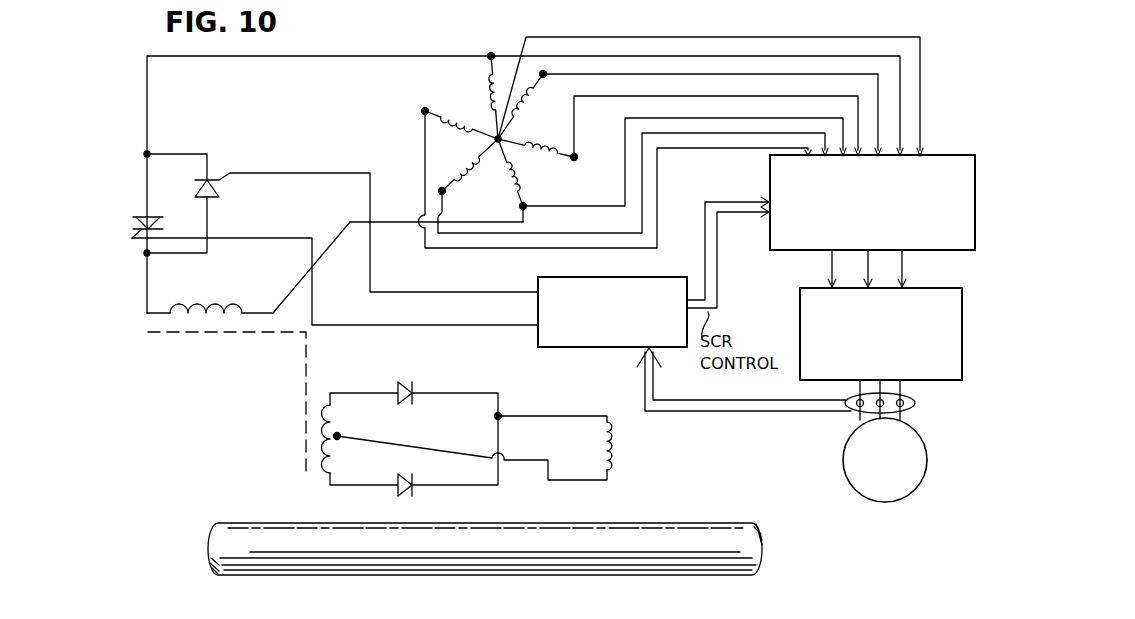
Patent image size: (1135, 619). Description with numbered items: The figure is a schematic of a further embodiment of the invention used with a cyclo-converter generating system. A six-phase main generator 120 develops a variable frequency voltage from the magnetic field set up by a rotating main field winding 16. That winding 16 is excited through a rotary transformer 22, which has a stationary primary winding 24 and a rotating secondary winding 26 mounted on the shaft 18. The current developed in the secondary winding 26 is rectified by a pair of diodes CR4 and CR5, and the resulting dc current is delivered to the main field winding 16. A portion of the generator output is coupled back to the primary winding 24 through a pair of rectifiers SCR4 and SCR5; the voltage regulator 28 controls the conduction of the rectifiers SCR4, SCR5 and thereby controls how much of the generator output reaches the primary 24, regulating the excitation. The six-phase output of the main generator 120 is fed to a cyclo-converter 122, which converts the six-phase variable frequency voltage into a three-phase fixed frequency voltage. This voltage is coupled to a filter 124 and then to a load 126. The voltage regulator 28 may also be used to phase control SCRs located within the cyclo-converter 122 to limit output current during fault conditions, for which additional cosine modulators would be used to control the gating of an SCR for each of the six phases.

The main field winding 16 is at (610, 472).
The shaft 18 is at (728, 533).
The rotary transformer 22 is at (256, 377).
The primary winding 24 is at (240, 310).
The secondary winding 26 is at (328, 404).
The voltage regulator 28 is at (602, 338).
The main generator 120 is at (431, 91).
The cyclo-converter 122 is at (930, 157).
The filter 124 is at (916, 302).
The load 126 is at (913, 460).
The rectifier SCR4 is at (212, 178).
The rectifier SCR5 is at (142, 214).
The diode CR4 is at (402, 388).
The diode CR5 is at (414, 490).